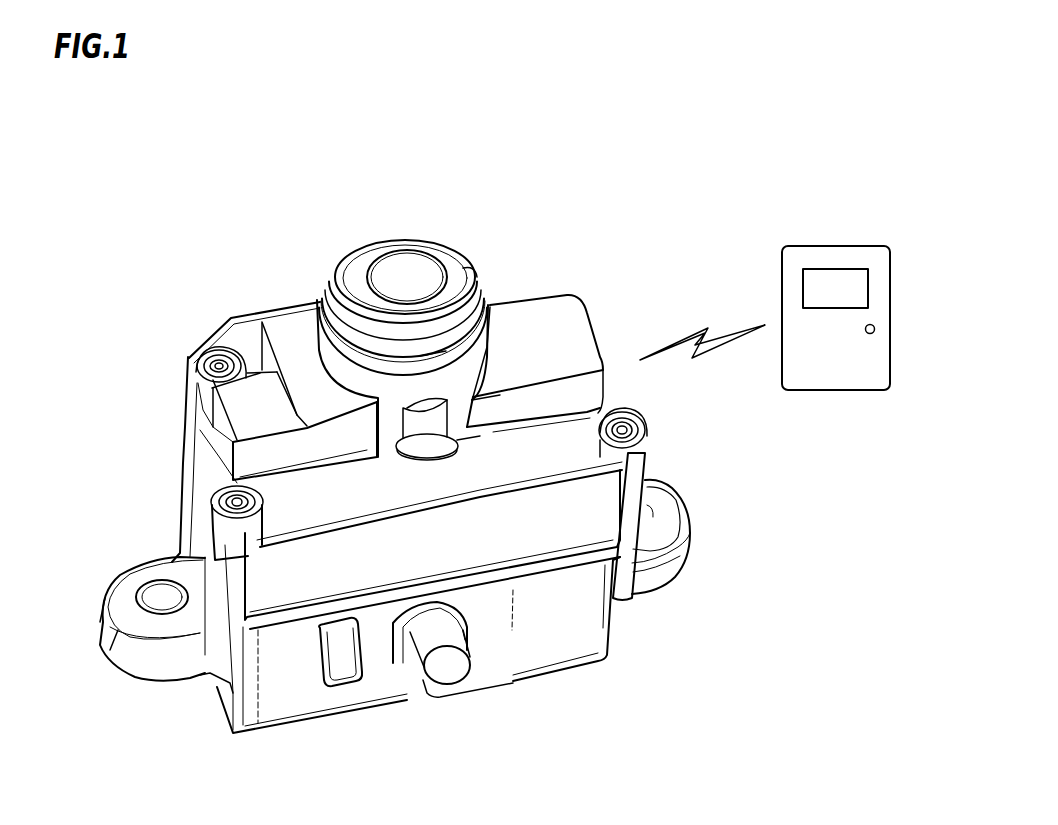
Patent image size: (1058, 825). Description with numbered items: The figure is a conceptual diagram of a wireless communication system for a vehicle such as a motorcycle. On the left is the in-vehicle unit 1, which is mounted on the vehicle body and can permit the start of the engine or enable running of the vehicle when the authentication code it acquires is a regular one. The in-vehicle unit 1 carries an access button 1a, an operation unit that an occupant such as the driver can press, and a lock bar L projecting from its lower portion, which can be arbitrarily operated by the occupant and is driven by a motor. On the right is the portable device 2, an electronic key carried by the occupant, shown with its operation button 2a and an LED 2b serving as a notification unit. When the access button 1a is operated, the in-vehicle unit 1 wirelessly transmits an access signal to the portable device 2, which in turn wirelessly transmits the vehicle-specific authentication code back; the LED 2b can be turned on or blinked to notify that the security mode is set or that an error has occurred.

The in-vehicle unit 1 is at (534, 289).
The access button 1a is at (410, 262).
The portable device 2 is at (868, 245).
The operation button 2a is at (821, 278).
The LED 2b is at (878, 330).
The lock bar L is at (452, 684).